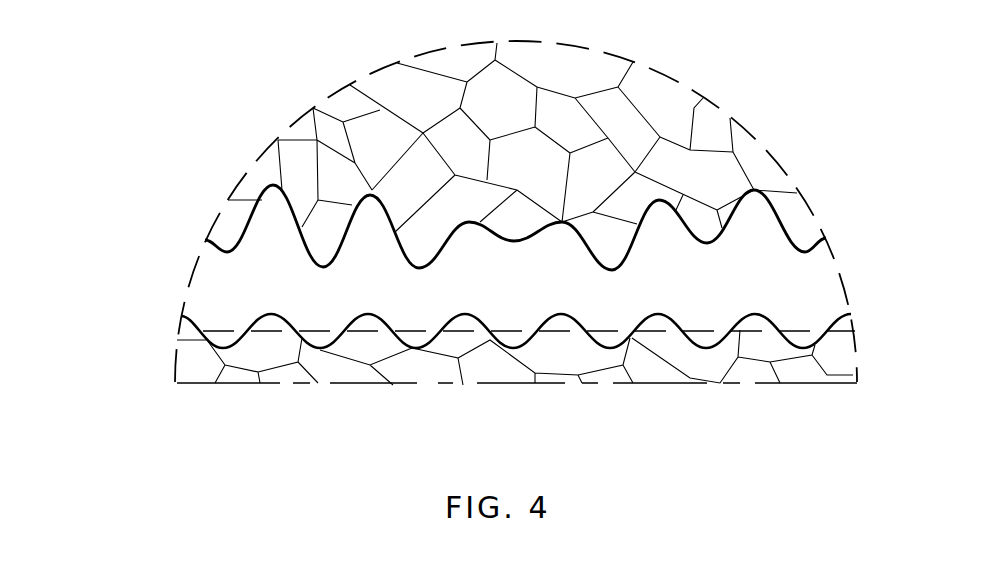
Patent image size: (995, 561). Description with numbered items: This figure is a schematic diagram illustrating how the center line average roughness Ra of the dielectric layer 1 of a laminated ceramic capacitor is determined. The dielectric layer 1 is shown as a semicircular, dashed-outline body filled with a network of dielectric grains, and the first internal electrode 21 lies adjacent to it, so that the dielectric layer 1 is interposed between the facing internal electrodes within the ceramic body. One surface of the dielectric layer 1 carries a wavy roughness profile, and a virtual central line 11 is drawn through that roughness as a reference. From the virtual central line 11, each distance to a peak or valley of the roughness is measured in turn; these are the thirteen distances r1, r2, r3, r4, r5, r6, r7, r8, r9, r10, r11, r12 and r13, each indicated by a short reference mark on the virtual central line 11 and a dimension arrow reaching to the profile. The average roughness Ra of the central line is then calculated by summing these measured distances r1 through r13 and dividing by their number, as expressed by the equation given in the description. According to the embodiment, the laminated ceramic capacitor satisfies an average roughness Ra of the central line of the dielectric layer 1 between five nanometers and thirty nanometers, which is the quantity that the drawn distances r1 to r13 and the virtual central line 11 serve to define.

The dielectric layer 1 is at (755, 159).
The virtual central line 11 is at (217, 328).
The first internal electrode 21 is at (822, 274).
The average roughness of the central line Ra is at (519, 428).
The distance r1 is at (227, 215).
The distance r2 is at (273, 163).
The distance r3 is at (323, 215).
The distance r4 is at (370, 173).
The distance r5 is at (419, 215).
The distance r6 is at (469, 200).
The distance r7 is at (514, 215).
The distance r8 is at (562, 200).
The distance r9 is at (612, 215).
The distance r10 is at (659, 178).
The distance r11 is at (707, 215).
The distance r12 is at (754, 168).
The distance r13 is at (805, 215).